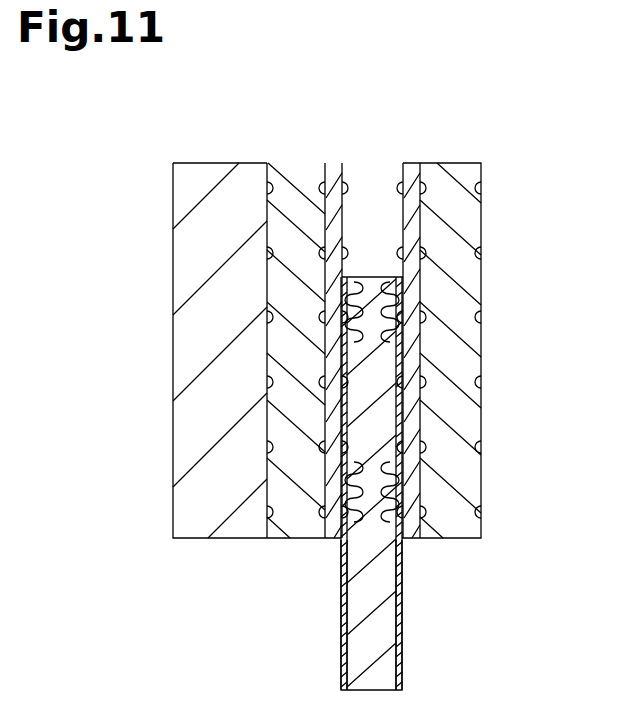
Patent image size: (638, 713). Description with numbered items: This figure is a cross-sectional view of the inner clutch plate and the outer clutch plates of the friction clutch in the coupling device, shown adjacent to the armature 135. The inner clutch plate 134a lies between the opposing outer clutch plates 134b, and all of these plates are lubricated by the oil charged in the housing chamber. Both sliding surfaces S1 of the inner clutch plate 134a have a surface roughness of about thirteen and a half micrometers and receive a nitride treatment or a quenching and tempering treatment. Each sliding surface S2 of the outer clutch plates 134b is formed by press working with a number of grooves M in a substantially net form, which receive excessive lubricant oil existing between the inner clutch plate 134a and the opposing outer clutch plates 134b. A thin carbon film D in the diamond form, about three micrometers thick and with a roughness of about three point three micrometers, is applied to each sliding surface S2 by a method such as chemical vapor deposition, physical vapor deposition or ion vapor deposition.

The armature 135 is at (193, 170).
The outer clutch plate 134b is at (285, 170).
The thin carbon film in the diamond form D is at (337, 164).
The sliding surface of the outer clutch plate S2 is at (403, 200).
The grooves M is at (342, 258).
The inner clutch plate 134a is at (350, 611).
The sliding surface of the inner clutch plate S1 is at (340, 658).